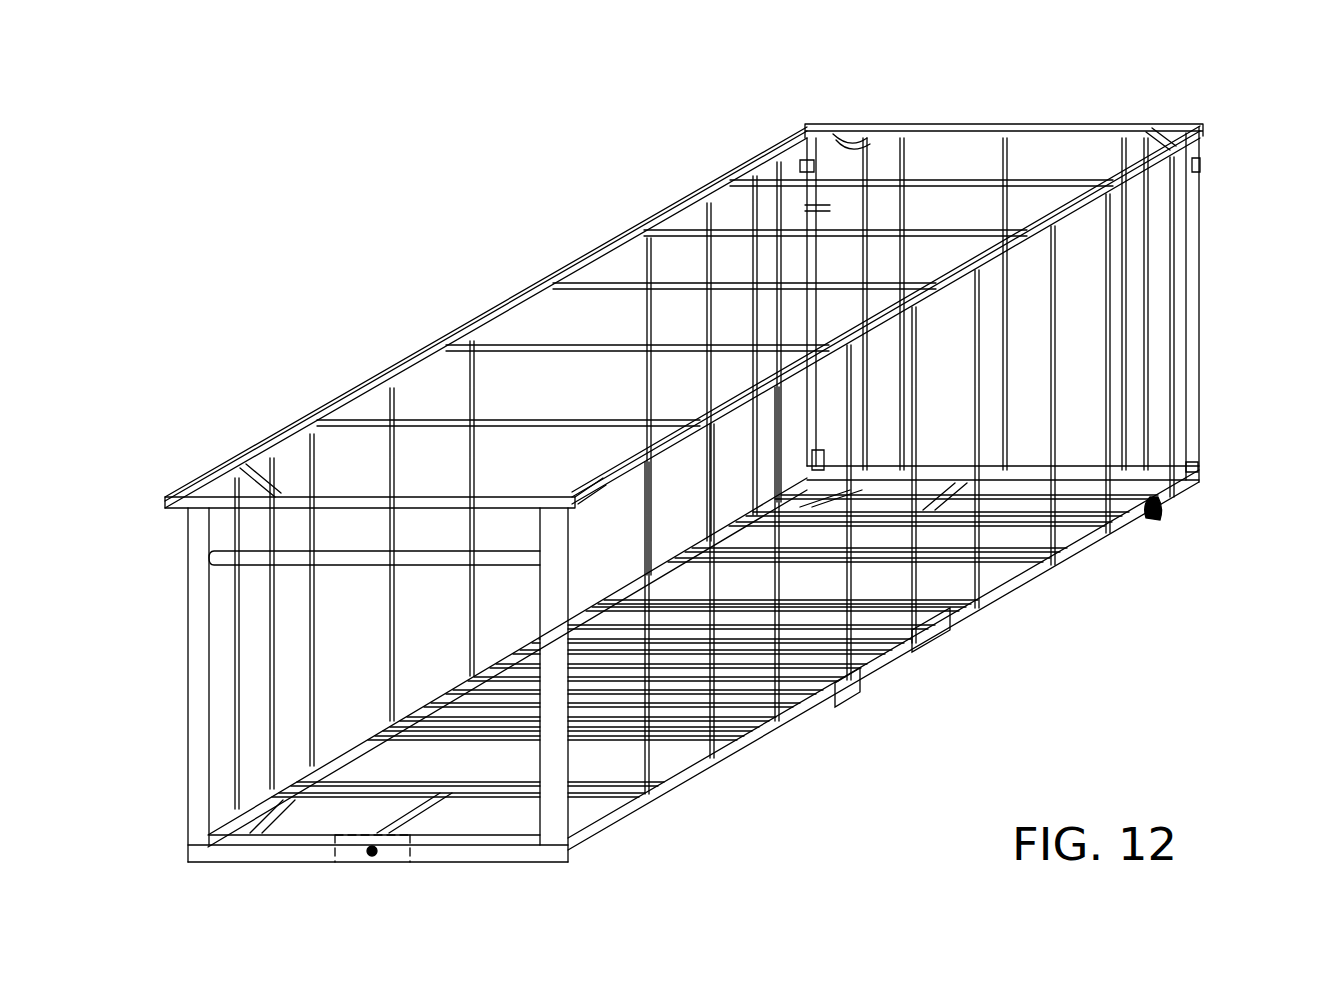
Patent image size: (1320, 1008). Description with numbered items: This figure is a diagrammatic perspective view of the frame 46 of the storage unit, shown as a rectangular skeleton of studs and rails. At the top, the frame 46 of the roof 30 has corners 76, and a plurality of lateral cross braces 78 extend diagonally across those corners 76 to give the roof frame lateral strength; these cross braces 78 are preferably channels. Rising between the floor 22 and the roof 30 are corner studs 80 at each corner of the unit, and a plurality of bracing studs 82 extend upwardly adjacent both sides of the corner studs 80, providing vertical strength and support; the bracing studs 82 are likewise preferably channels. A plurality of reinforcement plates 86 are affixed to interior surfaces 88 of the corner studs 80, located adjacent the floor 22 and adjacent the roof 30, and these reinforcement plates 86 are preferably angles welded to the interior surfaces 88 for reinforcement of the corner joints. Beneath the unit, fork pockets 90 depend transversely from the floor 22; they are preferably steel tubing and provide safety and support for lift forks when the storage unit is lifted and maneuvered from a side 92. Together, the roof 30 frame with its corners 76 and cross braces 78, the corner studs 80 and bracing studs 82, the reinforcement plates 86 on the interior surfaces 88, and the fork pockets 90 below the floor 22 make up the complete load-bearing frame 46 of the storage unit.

The floor 22 is at (1041, 569).
The roof 30 is at (574, 260).
The frame 46 is at (432, 283).
The corners 76 is at (182, 487).
The lateral cross braces 78 is at (262, 470).
The corner studs 80 is at (196, 606).
The bracing studs 82 is at (236, 729).
The reinforcement plates 86 is at (805, 168).
The interior surfaces 88 is at (812, 218).
The fork pockets 90 is at (365, 862).
The side 92 is at (374, 718).